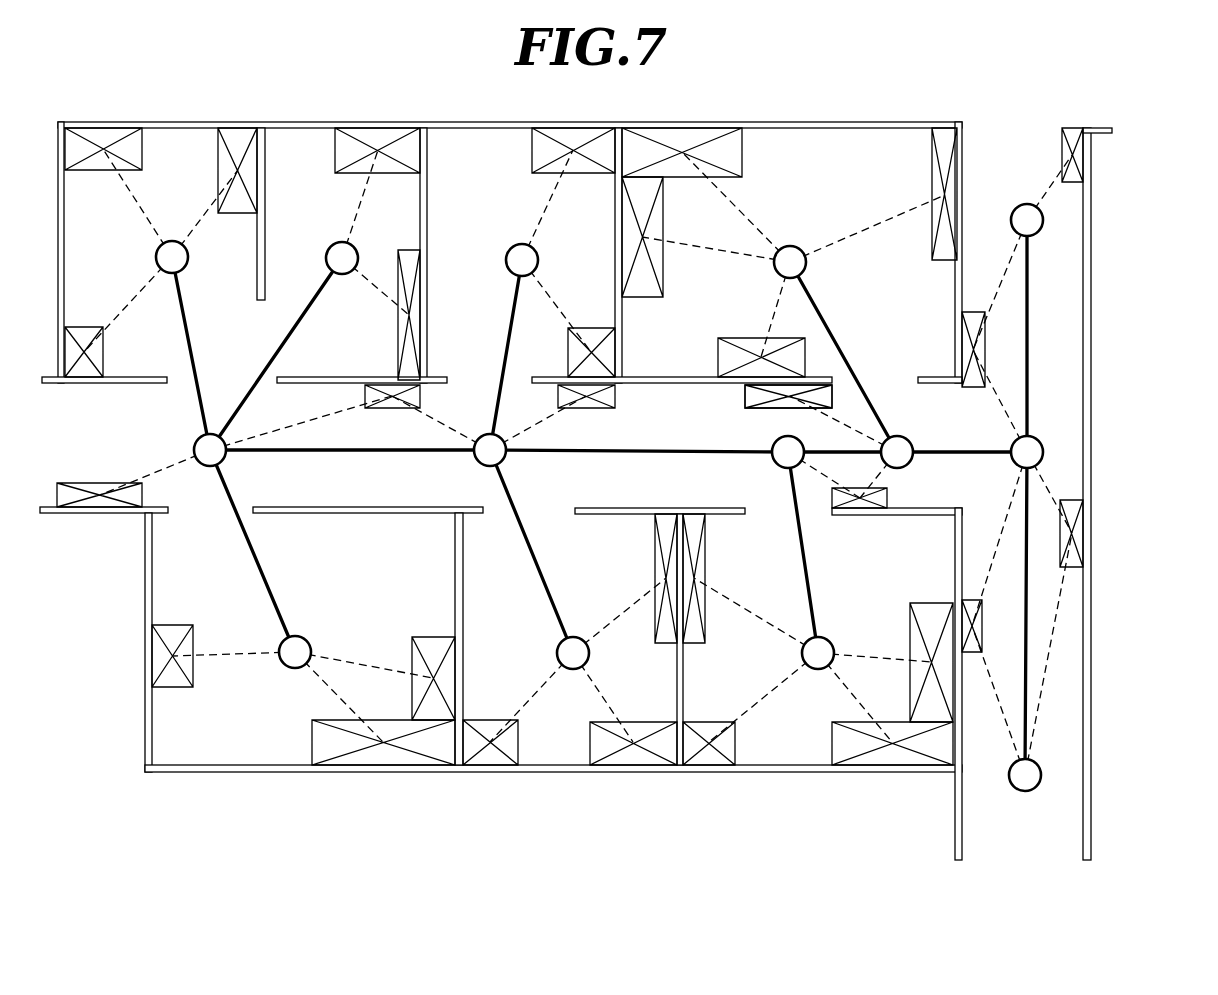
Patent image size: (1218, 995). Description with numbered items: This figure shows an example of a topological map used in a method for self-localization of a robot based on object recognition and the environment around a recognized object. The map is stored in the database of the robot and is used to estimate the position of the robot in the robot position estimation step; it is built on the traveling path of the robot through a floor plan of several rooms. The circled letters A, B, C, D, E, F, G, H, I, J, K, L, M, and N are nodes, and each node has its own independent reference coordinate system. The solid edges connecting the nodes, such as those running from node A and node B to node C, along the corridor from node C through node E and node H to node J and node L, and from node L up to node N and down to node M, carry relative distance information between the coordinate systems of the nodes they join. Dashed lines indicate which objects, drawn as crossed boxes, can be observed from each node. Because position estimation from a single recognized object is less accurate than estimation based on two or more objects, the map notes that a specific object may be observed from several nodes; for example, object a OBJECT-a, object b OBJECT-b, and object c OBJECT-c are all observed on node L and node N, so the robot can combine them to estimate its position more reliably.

The node A is at (172, 257).
The node B is at (342, 258).
The node C is at (210, 450).
The node D is at (295, 652).
The node E is at (490, 450).
The node F is at (522, 260).
The node G is at (573, 653).
The node H is at (788, 452).
The node I is at (818, 653).
The node J is at (897, 452).
The node K is at (790, 262).
The node L is at (1027, 452).
The node M is at (1025, 775).
The node N is at (1027, 220).
The object a OBJECT-a is at (864, 401).
The object b OBJECT-b is at (1084, 140).
The object c OBJECT-c is at (1126, 533).